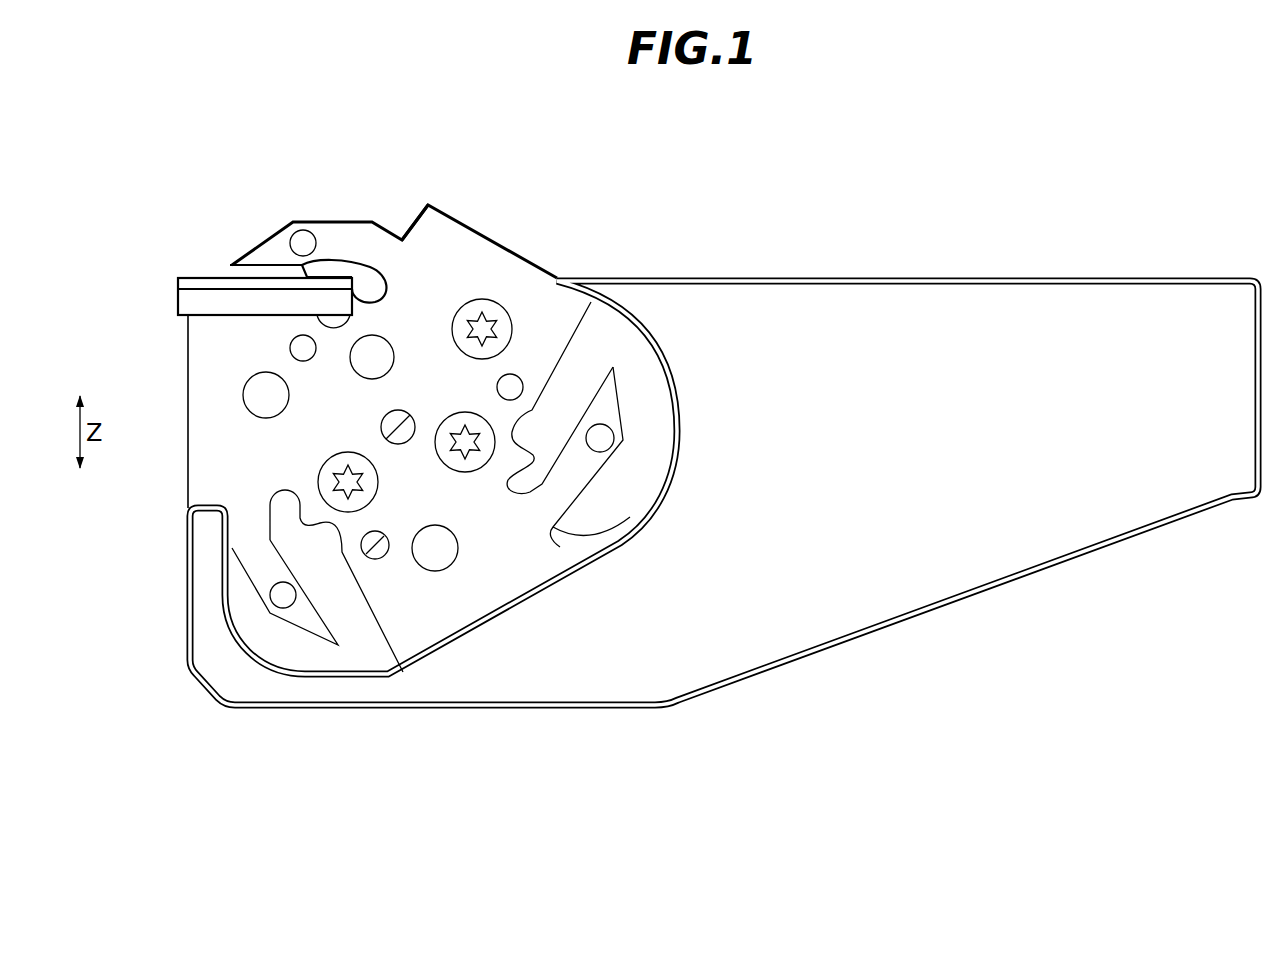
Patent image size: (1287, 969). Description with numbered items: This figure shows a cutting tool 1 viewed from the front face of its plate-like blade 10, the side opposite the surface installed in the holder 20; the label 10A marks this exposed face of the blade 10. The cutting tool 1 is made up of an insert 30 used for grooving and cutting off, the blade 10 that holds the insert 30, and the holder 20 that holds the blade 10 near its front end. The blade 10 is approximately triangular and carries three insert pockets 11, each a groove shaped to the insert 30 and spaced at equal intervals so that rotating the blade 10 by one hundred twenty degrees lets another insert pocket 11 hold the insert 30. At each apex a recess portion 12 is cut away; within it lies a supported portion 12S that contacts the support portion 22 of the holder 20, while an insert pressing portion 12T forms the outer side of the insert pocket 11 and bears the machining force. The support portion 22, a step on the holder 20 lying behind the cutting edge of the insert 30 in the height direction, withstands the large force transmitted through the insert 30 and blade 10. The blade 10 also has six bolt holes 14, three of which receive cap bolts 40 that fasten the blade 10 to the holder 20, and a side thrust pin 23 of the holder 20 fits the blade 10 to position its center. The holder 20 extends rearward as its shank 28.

The cutting tool 1 is at (172, 232).
The blade 10 is at (230, 441).
The surface of body 10A is at (237, 357).
The insert pocket 11 is at (596, 347).
The recess portion 12 is at (373, 208).
The supported portion 12S is at (417, 214).
The insert pressing portion 12T is at (607, 405).
The bolt hole 14 is at (376, 345).
The holder 20 is at (1100, 240).
The support portion 22 is at (200, 505).
The side thrust pin 23 is at (380, 423).
The shank 28 is at (922, 315).
The insert 30 is at (180, 296).
The cap bolt 40 is at (485, 300).